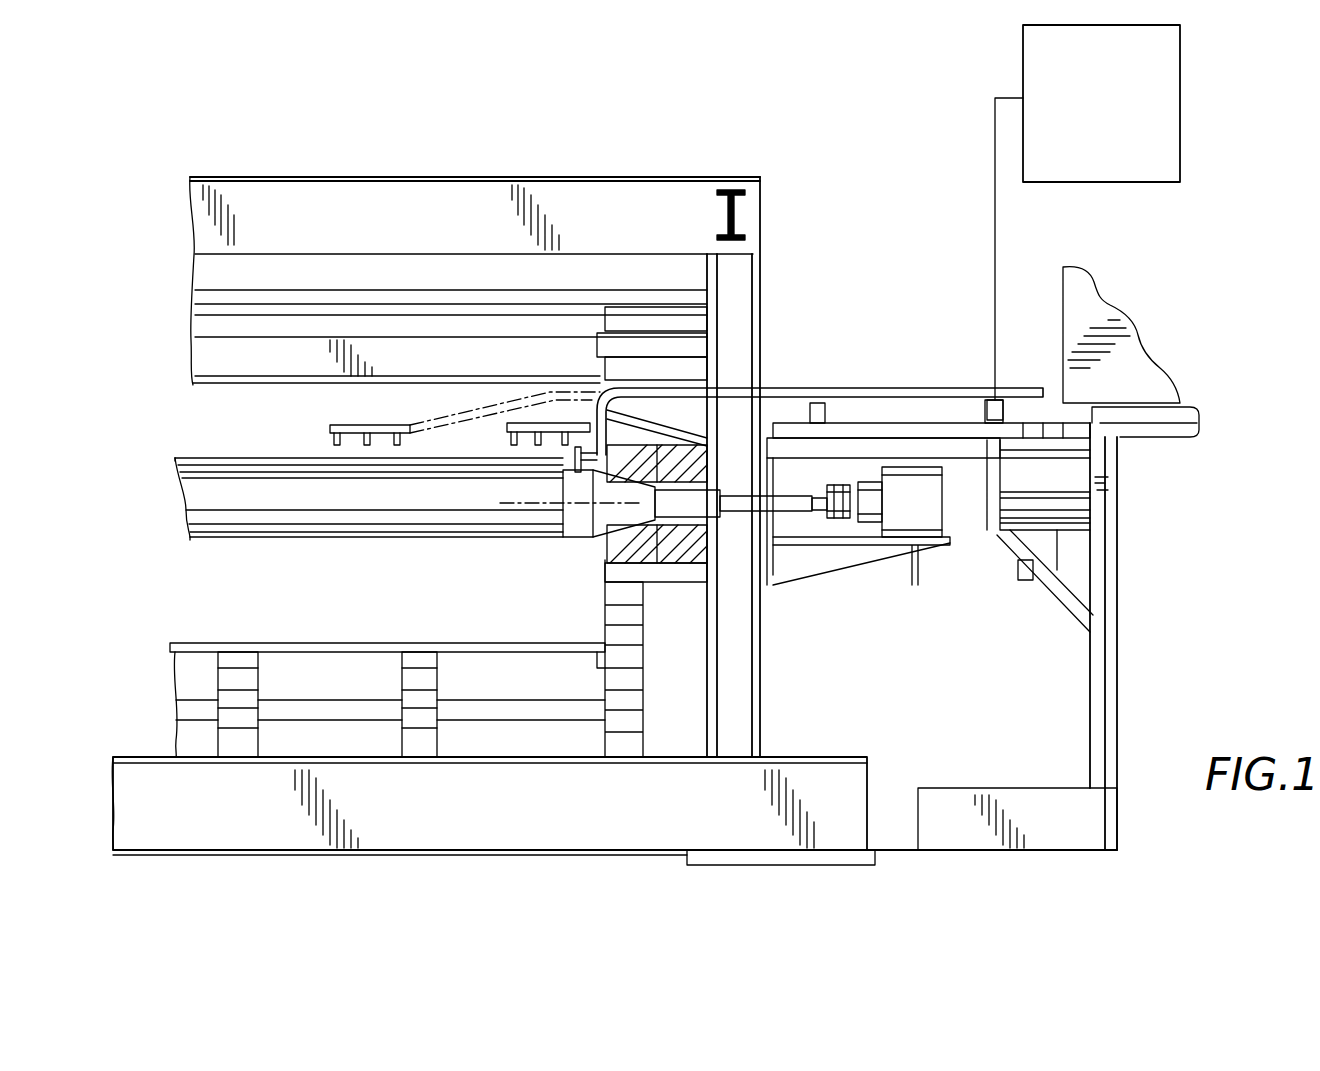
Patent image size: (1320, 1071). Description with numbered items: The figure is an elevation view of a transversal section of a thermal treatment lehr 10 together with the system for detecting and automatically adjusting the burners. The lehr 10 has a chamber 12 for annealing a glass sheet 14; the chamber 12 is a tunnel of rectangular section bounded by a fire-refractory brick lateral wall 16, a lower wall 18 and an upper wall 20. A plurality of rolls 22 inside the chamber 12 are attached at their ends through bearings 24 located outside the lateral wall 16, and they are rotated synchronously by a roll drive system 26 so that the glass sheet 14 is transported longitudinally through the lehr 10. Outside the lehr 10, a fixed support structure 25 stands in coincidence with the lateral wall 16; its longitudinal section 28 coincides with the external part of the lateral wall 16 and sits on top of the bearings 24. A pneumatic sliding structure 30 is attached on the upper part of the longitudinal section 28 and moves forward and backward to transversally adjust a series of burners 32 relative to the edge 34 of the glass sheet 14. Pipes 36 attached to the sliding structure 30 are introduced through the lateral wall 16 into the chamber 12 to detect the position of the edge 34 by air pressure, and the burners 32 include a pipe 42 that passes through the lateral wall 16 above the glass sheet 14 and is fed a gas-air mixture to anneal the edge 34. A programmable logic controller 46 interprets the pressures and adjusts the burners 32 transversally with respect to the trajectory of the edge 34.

The thermal treatment lehr 10 is at (268, 172).
The chamber 12 is at (201, 396).
The glass sheet 14 is at (195, 452).
The lateral wall 16 is at (738, 307).
The lower wall 18 is at (276, 818).
The upper wall 20 is at (347, 222).
The roll 22 is at (300, 498).
The bearing 24 is at (877, 482).
The fixed support structure 25 is at (1098, 612).
The roll drive system 26 is at (928, 500).
The longitudinal section 28 is at (972, 458).
The pneumatic sliding structure 30 is at (930, 423).
The burner 32 is at (348, 410).
The edge 34 is at (172, 459).
The pipe 36 is at (801, 388).
The pipe 42 is at (478, 407).
The programmable logic controller 46 is at (1118, 117).